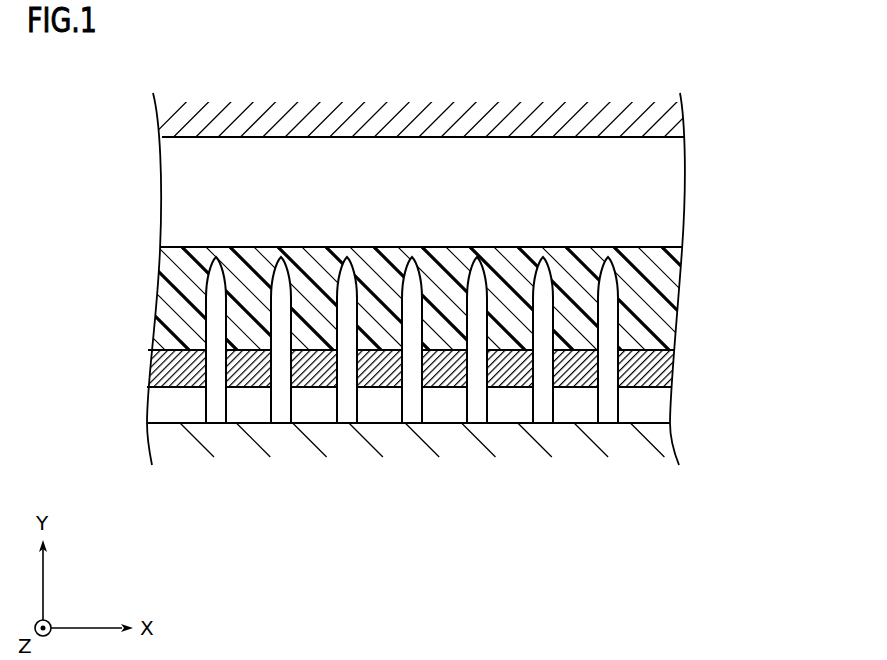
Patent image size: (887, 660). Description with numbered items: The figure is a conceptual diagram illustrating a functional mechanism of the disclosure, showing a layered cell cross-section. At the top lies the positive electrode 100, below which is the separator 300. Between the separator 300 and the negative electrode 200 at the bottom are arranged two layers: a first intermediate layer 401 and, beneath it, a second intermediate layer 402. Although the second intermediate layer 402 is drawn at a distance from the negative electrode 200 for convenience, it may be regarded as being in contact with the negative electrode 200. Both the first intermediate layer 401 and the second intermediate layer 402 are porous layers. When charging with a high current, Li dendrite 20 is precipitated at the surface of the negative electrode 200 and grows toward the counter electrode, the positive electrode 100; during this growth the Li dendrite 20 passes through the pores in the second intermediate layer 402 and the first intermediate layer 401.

The positive electrode 100 is at (160, 117).
The separator 300 is at (162, 205).
The first intermediate layer 401 is at (162, 293).
The second intermediate layer 402 is at (148, 372).
The negative electrode 200 is at (148, 446).
The Li dendrite 20 is at (610, 402).